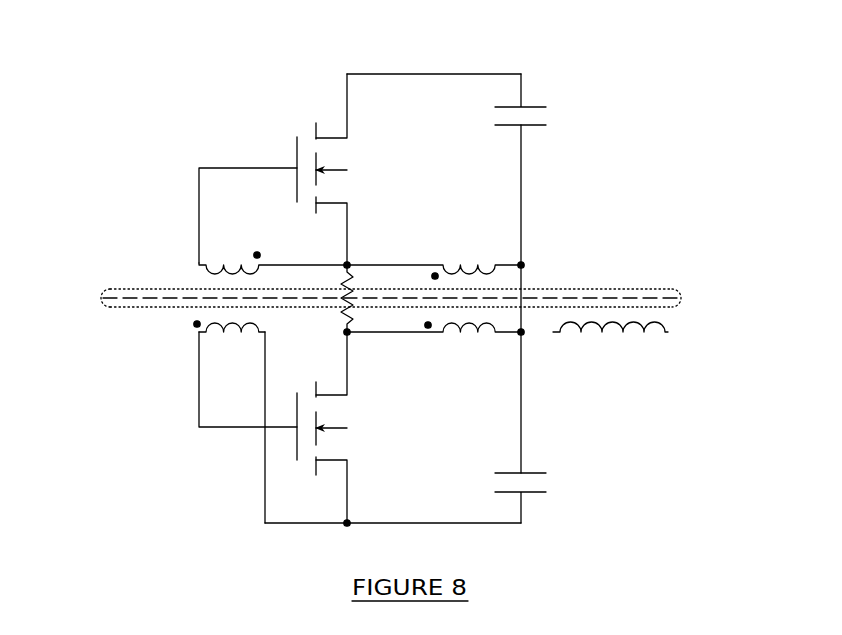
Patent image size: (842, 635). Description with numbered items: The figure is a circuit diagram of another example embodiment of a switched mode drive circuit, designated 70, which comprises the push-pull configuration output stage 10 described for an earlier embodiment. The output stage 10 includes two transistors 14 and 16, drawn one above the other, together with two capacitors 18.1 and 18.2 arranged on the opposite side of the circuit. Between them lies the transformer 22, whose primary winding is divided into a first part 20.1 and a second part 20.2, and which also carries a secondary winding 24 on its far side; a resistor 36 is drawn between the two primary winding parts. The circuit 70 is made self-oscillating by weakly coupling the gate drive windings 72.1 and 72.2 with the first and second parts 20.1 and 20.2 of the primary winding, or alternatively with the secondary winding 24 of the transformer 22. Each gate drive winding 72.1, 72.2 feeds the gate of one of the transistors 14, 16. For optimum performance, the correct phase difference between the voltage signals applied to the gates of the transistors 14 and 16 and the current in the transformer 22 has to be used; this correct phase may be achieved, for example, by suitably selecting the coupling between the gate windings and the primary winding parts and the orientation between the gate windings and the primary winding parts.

The output stage 10 is at (367, 113).
The transistor 14 is at (280, 125).
The transistor 16 is at (285, 467).
The capacitor 18.1 is at (480, 74).
The capacitor 18.2 is at (495, 525).
The first part of the primary winding 20.1 is at (462, 266).
The second part of the primary winding 20.2 is at (469, 334).
The transformer 22 is at (575, 262).
The secondary winding 24 is at (610, 327).
The resistor 36 is at (356, 288).
The drive circuit 70 is at (657, 98).
The gate drive winding 72.1 is at (216, 284).
The gate drive winding 72.2 is at (193, 315).